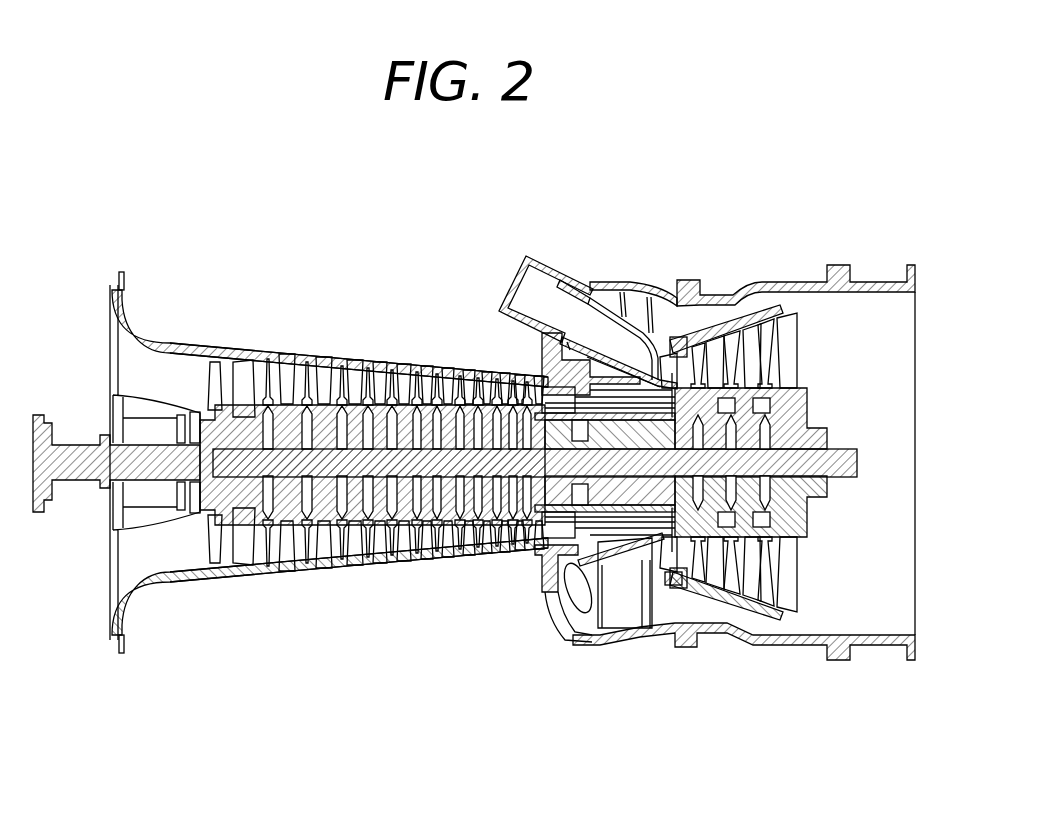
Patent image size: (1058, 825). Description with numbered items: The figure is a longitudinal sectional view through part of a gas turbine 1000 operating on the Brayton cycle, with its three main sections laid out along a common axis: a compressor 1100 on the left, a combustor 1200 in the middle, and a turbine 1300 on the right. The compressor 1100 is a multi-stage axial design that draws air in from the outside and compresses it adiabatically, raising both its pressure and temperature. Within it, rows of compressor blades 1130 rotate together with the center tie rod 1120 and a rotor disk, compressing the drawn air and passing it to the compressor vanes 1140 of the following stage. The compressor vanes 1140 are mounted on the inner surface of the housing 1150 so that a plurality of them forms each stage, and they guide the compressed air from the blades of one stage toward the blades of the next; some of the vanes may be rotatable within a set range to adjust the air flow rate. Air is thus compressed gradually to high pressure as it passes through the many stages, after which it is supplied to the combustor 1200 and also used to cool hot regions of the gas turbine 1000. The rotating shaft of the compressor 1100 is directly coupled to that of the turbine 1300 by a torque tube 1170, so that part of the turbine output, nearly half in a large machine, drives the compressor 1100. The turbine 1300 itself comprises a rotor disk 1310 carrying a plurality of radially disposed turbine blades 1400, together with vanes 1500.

The gas turbine 1000 is at (202, 165).
The compressor 1100 is at (353, 576).
The center tie rod 1120 is at (446, 463).
The compressor blades 1130 is at (276, 350).
The compressor vanes 1140 is at (300, 352).
The housing 1150 is at (400, 352).
The torque tube 1170 is at (600, 583).
The combustor 1200 is at (536, 250).
The turbine 1300 is at (714, 535).
The rotor disk 1310 is at (800, 400).
The turbine blades 1400 is at (745, 350).
The vanes 1500 is at (728, 350).